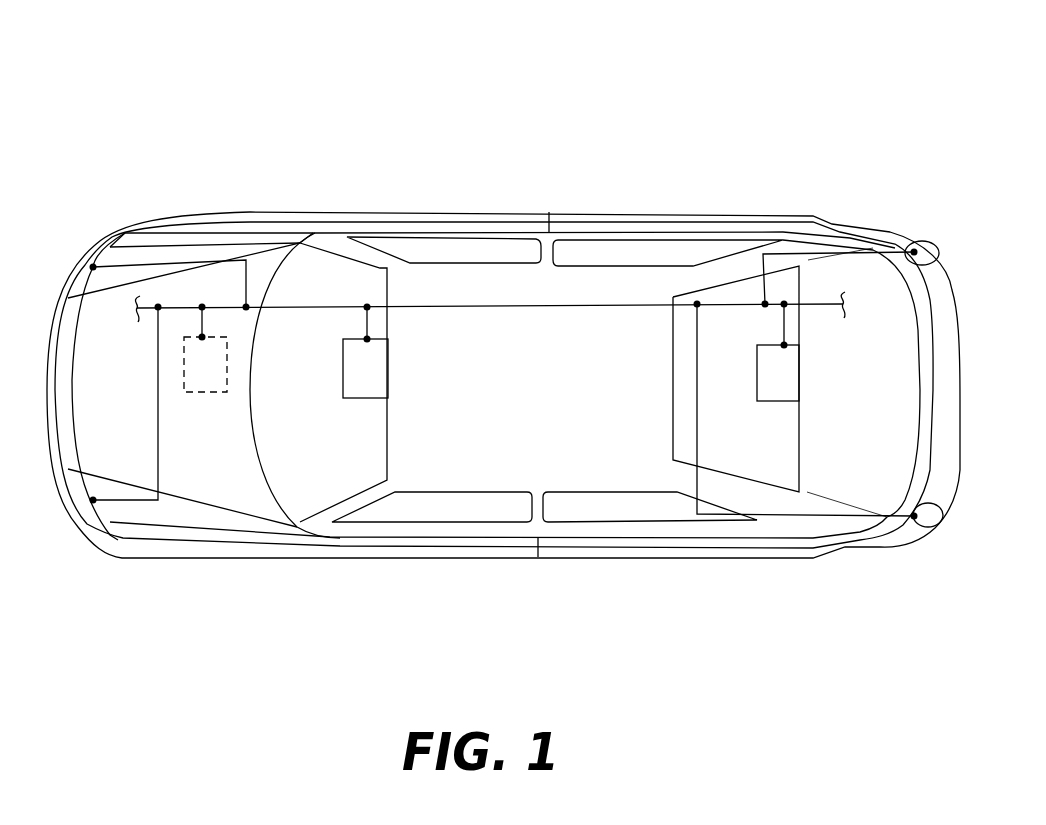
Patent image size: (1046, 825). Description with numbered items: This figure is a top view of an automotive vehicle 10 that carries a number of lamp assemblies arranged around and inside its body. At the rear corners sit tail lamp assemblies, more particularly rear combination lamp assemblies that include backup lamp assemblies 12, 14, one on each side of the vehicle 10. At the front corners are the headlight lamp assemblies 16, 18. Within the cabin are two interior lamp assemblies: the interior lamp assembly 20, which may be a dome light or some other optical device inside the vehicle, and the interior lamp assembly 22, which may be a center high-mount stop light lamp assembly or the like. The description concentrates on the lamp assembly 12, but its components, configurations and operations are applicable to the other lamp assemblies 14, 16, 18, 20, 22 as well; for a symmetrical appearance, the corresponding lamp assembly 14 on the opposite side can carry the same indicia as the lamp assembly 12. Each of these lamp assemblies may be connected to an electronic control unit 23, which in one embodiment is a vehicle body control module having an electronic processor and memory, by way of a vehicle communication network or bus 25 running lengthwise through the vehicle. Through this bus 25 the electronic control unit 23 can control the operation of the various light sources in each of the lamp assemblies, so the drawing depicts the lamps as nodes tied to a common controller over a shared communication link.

The vehicle 10 is at (578, 58).
The lamp assembly 12 is at (914, 252).
The lamp assembly 14 is at (930, 518).
The headlight lamp assembly 16 is at (92, 525).
The headlight lamp assembly 18 is at (93, 267).
The interior lamp assembly 20 is at (375, 370).
The interior lamp assembly 22 is at (783, 373).
The electronic control unit 23 is at (207, 373).
The bus 25 is at (563, 307).